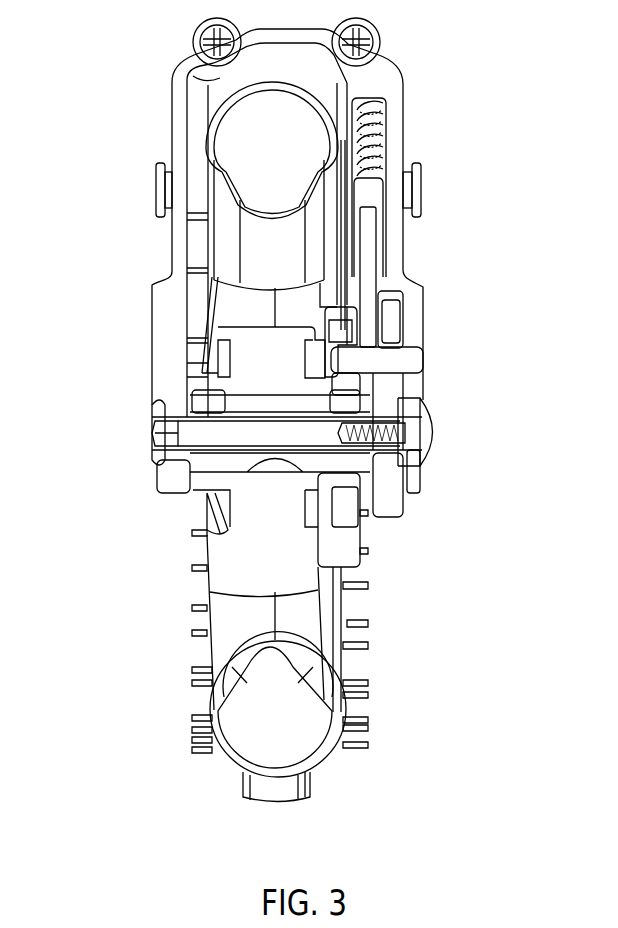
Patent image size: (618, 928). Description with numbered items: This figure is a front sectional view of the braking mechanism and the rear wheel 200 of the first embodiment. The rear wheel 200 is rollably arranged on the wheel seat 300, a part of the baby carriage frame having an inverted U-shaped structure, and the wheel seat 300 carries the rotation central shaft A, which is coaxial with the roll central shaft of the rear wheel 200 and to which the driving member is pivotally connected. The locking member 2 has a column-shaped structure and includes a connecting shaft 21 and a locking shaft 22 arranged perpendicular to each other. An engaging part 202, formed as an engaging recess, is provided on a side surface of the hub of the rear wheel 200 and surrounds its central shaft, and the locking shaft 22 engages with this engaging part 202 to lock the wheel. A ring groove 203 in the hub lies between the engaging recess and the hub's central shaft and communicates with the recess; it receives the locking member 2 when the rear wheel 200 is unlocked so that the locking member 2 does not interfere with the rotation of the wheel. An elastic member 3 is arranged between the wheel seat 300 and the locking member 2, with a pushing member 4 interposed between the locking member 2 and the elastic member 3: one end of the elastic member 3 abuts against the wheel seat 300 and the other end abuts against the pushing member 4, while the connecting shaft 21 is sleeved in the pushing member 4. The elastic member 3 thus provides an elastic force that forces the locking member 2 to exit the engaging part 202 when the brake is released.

The wheel seat 300 is at (170, 317).
The elastic member 3 is at (380, 125).
The pushing member 4 is at (367, 195).
The engaging part 202 is at (343, 330).
The connecting shaft 21 is at (370, 333).
The locking shaft 22 is at (382, 360).
The locking member 2 is at (552, 362).
The ring groove 203 is at (349, 379).
The rotation central shaft A is at (225, 432).
The rear wheel 200 is at (213, 608).